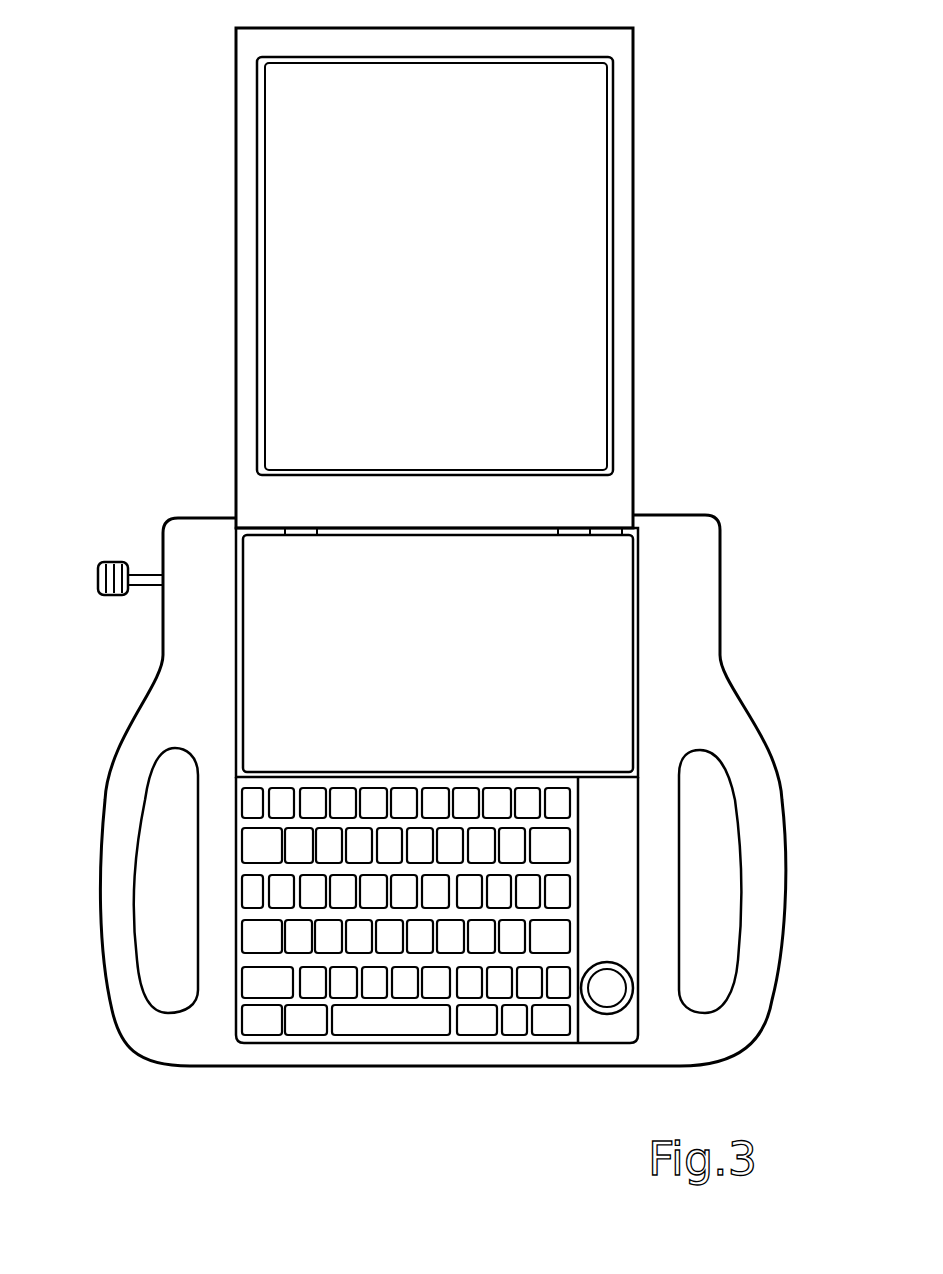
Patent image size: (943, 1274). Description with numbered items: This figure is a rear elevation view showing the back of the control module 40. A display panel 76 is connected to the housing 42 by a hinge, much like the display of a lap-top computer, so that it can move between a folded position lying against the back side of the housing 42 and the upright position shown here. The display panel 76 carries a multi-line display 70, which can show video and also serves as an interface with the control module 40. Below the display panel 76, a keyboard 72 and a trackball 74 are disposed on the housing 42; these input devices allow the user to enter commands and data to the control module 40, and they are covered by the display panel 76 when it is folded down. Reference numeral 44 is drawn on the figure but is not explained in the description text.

The control module 40 is at (445, 580).
The housing 42 is at (720, 597).
The hand grips 44 is at (105, 803).
The multi-line display 70 is at (588, 288).
The keyboard 72 is at (348, 1022).
The trackball 74 is at (600, 1018).
The display panel 76 is at (633, 193).